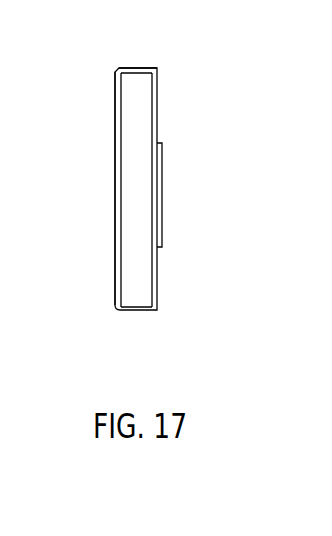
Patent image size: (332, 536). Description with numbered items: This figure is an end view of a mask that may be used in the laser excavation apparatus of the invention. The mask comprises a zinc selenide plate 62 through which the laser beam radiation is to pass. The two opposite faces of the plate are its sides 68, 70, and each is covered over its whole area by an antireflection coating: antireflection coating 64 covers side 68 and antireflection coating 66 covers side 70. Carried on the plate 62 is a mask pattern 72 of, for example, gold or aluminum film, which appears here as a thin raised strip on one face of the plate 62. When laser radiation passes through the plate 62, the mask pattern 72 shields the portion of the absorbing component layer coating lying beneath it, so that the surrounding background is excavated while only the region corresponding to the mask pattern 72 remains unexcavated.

The zinc selenide plate 62 is at (130, 228).
The antireflection coating 64 is at (116, 108).
The antireflection coating 66 is at (159, 92).
The side of plate 68 is at (124, 142).
The side of plate 70 is at (135, 127).
The mask pattern 72 is at (162, 228).